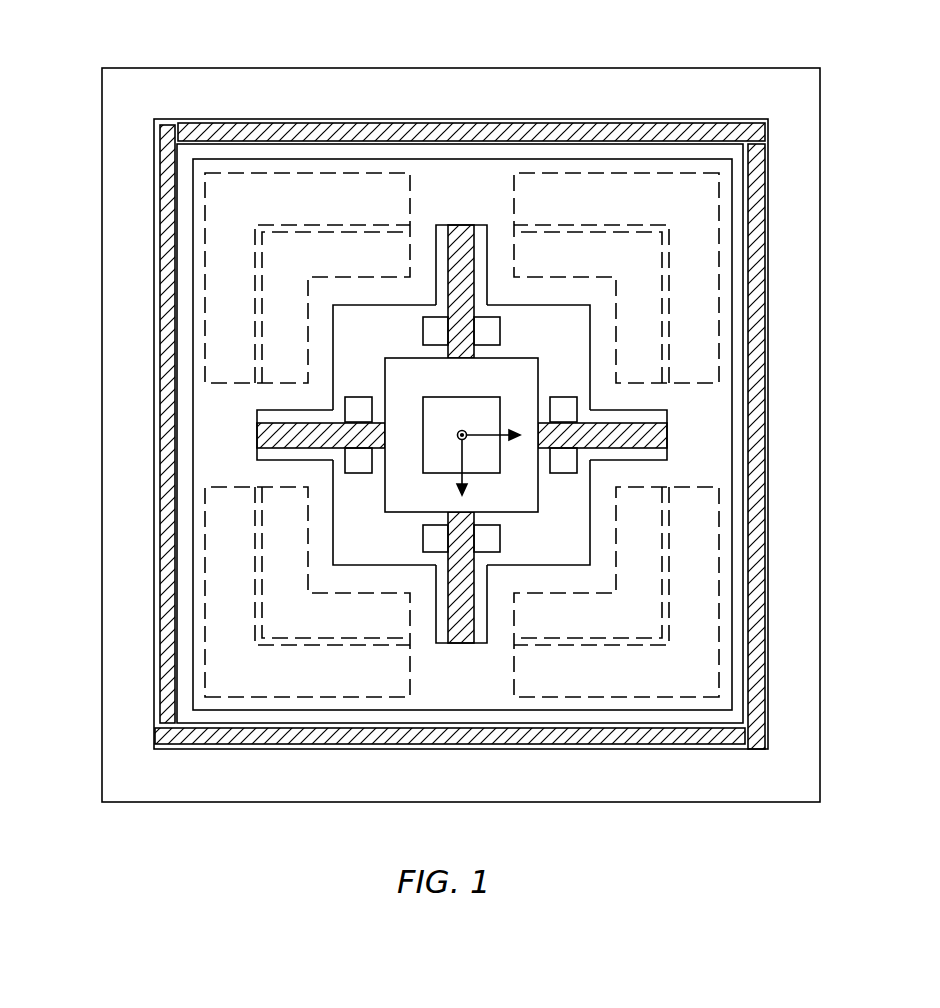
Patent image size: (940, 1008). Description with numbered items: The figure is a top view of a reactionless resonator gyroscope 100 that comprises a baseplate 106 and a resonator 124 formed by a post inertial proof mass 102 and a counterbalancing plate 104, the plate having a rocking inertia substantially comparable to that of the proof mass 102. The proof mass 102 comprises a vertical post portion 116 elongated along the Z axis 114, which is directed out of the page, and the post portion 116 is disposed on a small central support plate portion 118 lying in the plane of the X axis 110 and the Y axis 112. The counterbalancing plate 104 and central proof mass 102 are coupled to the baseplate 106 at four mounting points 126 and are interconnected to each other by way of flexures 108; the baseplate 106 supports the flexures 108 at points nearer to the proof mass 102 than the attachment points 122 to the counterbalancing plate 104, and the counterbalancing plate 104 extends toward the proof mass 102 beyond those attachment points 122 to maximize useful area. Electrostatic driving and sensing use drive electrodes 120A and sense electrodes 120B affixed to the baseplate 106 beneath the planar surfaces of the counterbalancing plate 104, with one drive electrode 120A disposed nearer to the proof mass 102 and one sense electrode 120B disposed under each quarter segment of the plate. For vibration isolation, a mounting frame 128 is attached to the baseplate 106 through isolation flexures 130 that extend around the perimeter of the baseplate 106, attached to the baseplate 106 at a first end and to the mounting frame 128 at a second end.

The reactionless resonator gyroscope 100 is at (880, 137).
The post inertial proof mass 102 is at (393, 346).
The counterbalancing plate 104 is at (732, 372).
The baseplate 106 is at (745, 330).
The flexures 108 is at (448, 247).
The X axis 110 is at (437, 490).
The Y axis 112 is at (510, 466).
The Z axis 114 is at (437, 420).
The vertical post portion 116 is at (492, 396).
The central support plate portion 118 is at (500, 356).
The drive electrodes 120A is at (270, 384).
The sense electrodes 120B is at (205, 306).
The attachment points 122 is at (462, 226).
The resonator 124 is at (182, 152).
The mounting points 126 is at (485, 317).
The mounting frame 128 is at (820, 600).
The isolation flexures 130 is at (566, 122).